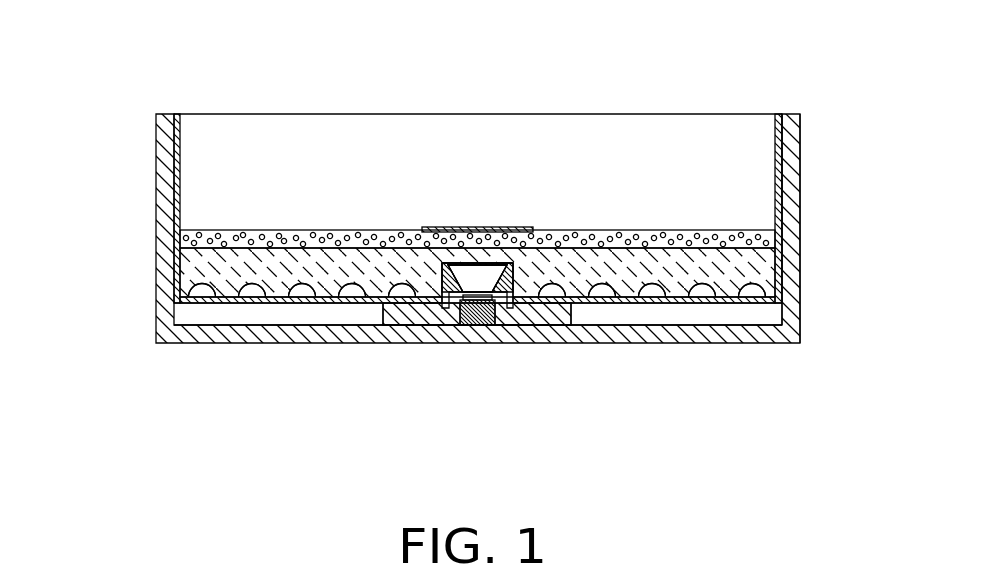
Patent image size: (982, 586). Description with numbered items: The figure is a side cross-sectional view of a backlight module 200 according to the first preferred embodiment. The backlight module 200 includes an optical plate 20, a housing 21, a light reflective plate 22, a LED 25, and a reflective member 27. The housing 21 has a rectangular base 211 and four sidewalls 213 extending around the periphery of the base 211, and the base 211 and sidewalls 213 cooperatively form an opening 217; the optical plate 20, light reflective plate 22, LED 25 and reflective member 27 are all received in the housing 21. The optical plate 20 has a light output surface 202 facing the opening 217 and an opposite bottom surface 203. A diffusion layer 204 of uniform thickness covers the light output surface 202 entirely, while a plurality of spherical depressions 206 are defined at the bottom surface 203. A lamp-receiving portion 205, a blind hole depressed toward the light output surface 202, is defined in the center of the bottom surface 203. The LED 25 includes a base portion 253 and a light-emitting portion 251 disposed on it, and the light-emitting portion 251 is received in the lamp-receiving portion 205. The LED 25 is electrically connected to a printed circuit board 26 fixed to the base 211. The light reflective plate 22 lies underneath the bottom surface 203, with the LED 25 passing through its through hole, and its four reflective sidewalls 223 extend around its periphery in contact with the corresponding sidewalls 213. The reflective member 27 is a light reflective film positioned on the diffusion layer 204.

The backlight module 200 is at (403, 114).
The optical plate 20 is at (67, 215).
The light output surface 202 is at (203, 251).
The bottom surface 203 is at (218, 302).
The diffusion layer 204 is at (187, 237).
The lamp-receiving portion 205 is at (477, 275).
The spherical depressions 206 is at (203, 292).
The housing 21 is at (871, 298).
The base 211 is at (712, 335).
The sidewalls 213 is at (790, 314).
The opening 217 is at (688, 168).
The reflective sidewalls 223 is at (778, 192).
The light reflective plate 22 is at (281, 297).
The LED 25 is at (535, 403).
The light-emitting portion 251 is at (506, 316).
The base portion 253 is at (470, 312).
The printed circuit board 26 is at (553, 318).
The reflective member 27 is at (425, 232).